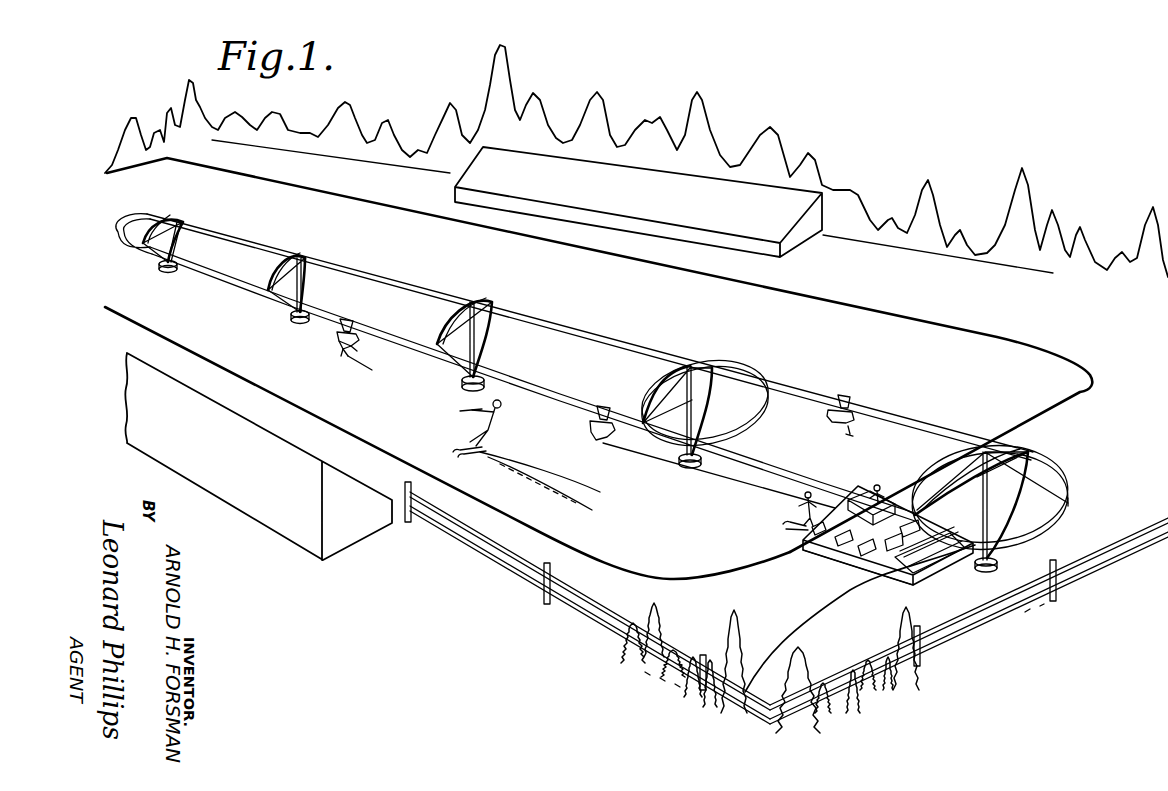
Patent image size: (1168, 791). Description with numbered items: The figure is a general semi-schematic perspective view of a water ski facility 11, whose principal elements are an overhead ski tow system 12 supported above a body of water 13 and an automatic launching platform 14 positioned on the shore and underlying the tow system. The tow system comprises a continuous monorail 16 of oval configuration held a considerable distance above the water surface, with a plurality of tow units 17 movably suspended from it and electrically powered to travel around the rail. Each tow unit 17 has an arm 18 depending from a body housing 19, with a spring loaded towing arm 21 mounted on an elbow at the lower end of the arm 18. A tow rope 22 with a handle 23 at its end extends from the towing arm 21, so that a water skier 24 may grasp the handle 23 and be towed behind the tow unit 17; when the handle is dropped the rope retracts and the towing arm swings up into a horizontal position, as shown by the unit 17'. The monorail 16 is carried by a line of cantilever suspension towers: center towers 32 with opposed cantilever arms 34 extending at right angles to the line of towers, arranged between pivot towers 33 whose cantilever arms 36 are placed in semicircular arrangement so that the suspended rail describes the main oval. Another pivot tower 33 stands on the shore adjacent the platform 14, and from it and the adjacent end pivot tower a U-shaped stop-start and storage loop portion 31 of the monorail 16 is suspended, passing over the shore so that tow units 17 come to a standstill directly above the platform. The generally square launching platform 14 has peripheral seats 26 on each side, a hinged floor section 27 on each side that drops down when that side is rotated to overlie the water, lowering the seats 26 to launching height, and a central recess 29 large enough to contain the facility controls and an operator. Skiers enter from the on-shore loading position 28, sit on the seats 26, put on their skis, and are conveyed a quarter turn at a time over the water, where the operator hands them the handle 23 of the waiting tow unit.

The water ski facility 11 is at (948, 351).
The overhead ski tow system 12 is at (540, 348).
The body of water 13 is at (208, 328).
The automatic launching platform 14 is at (849, 558).
The monorail 16 is at (217, 278).
The tow unit 17 is at (313, 334).
The tow unit with towing arm swung up 17' is at (864, 427).
The arm 18 is at (334, 350).
The body housing 19 is at (355, 345).
The towing arm 21 is at (341, 354).
The tow rope 22 is at (378, 372).
The handle 23 is at (467, 407).
The water skier 24 is at (505, 418).
The peripheral seats 26 is at (873, 557).
The hinged floor section 27 is at (837, 550).
The on shore loading position 28 is at (942, 557).
The central recess 29 is at (915, 494).
The stop-start and storage loop portion 31 is at (922, 421).
The center towers 32 is at (303, 287).
The pivot towers 33 is at (176, 244).
The cantilever arms 34 is at (284, 257).
The cantilever arms 36 is at (760, 400).